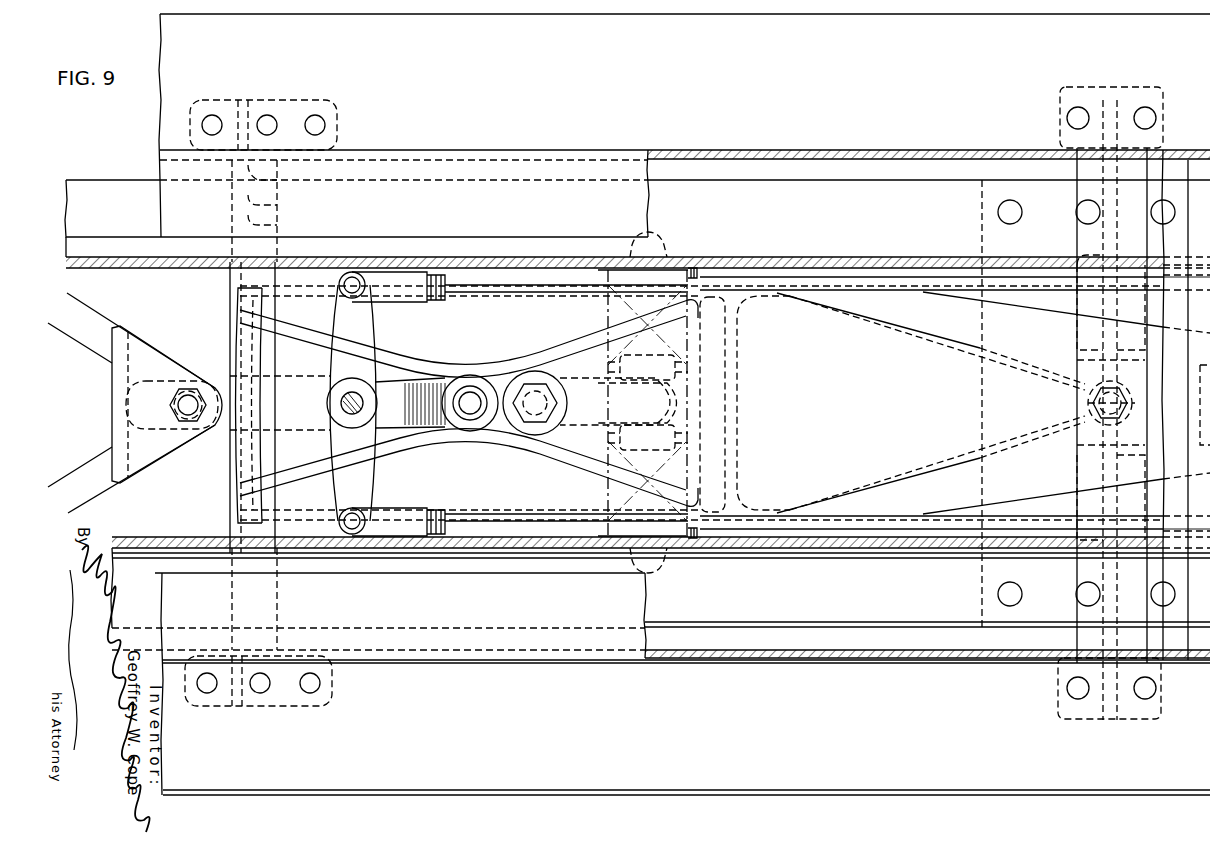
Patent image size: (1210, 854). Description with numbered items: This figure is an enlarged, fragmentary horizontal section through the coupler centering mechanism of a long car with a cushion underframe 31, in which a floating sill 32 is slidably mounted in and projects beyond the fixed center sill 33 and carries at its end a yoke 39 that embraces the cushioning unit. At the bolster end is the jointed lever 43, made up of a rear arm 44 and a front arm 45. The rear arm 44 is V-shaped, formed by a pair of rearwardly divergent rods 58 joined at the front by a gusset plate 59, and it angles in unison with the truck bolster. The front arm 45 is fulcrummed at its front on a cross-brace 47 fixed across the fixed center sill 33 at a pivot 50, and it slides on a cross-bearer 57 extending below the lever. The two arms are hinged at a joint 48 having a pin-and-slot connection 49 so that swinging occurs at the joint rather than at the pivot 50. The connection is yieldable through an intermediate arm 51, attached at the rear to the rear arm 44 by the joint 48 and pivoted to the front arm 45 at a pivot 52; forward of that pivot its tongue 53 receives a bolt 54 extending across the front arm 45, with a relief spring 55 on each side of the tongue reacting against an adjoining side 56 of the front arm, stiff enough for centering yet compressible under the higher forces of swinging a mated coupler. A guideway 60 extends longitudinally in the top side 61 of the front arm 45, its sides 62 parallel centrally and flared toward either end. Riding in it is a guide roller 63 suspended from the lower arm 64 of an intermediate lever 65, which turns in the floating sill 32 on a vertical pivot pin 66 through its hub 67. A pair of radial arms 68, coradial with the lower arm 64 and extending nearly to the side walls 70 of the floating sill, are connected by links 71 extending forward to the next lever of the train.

The cushion underframe 31 is at (152, 105).
The floating sill 32 is at (107, 180).
The fixed center sill 33 is at (160, 50).
The yoke 39 is at (1186, 398).
The jointed lever 43 is at (163, 452).
The rear arm 44 is at (74, 298).
The front arm 45 is at (861, 413).
The cross-brace 47 is at (1150, 168).
The joint 48 is at (190, 431).
The pin-and-slot connection 49 is at (188, 385).
The pivot 50 is at (1095, 404).
The intermediate arm 51 is at (577, 378).
The pivot 52 is at (568, 403).
The tongue 53 is at (688, 405).
The bolt 54 is at (660, 574).
The relief spring 55 is at (692, 350).
The side 56 is at (283, 284).
The cross-bearer 57 is at (238, 294).
The rods 58 is at (76, 340).
The gusset plate 59 is at (110, 406).
The guideway 60 is at (560, 452).
The top side 61 is at (716, 391).
The sides 62 is at (468, 363).
The guide roller 63 is at (488, 428).
The lower arm 64 is at (408, 414).
The intermediate lever 65 is at (323, 362).
The pivot pin 66 is at (340, 404).
The hub 67 is at (352, 378).
The radial arms 68 is at (374, 320).
The side walls 70 is at (184, 268).
The links 71 is at (880, 304).